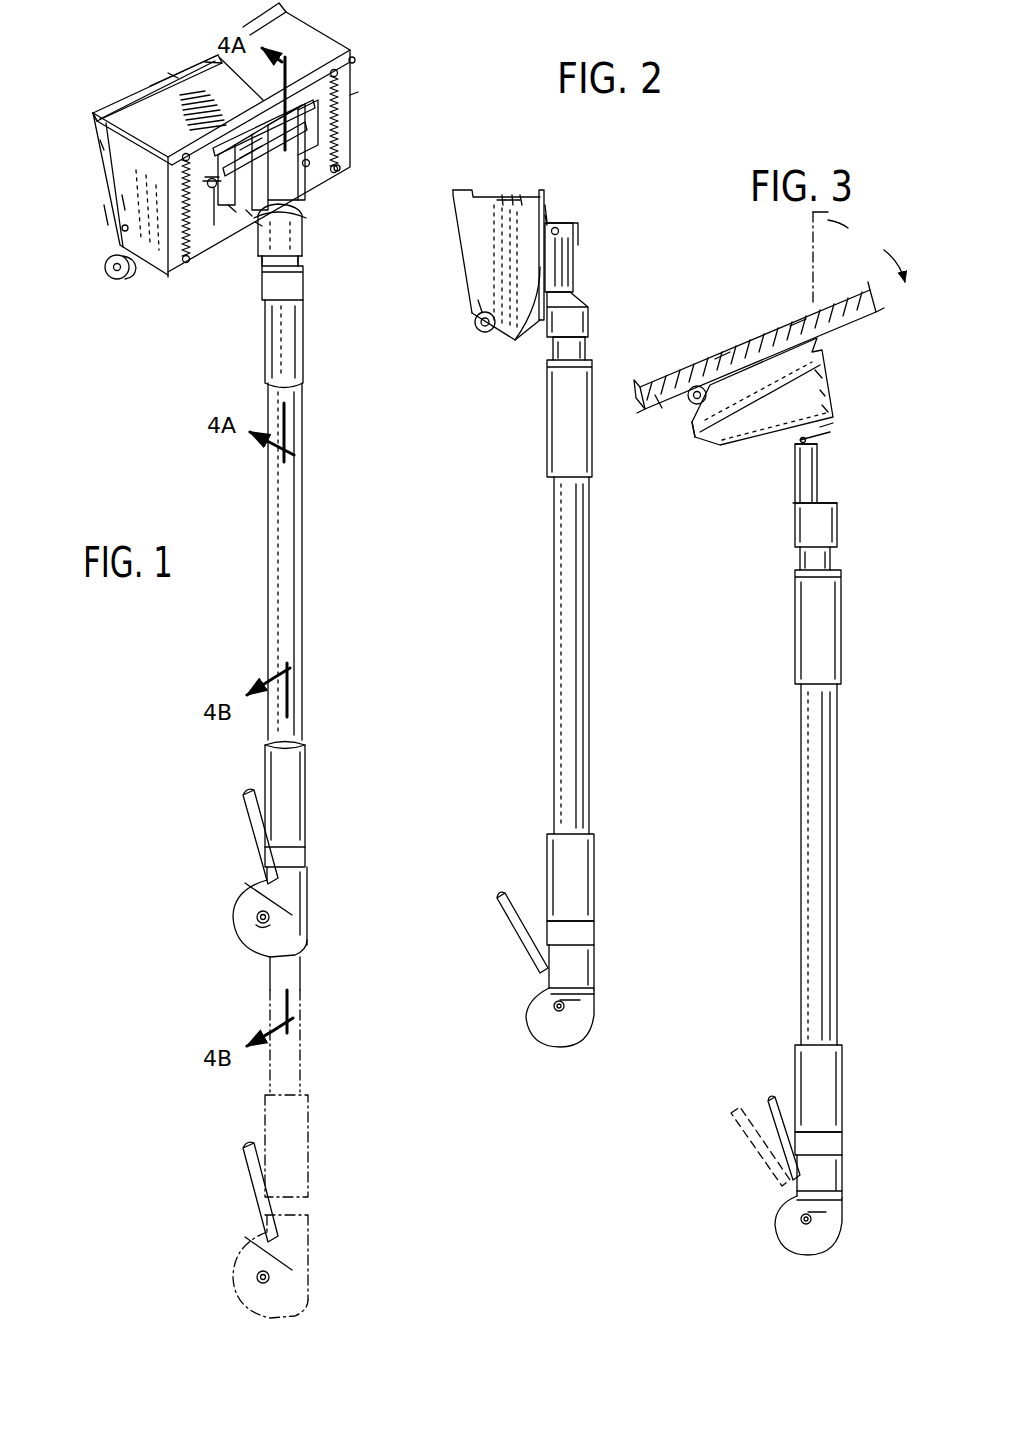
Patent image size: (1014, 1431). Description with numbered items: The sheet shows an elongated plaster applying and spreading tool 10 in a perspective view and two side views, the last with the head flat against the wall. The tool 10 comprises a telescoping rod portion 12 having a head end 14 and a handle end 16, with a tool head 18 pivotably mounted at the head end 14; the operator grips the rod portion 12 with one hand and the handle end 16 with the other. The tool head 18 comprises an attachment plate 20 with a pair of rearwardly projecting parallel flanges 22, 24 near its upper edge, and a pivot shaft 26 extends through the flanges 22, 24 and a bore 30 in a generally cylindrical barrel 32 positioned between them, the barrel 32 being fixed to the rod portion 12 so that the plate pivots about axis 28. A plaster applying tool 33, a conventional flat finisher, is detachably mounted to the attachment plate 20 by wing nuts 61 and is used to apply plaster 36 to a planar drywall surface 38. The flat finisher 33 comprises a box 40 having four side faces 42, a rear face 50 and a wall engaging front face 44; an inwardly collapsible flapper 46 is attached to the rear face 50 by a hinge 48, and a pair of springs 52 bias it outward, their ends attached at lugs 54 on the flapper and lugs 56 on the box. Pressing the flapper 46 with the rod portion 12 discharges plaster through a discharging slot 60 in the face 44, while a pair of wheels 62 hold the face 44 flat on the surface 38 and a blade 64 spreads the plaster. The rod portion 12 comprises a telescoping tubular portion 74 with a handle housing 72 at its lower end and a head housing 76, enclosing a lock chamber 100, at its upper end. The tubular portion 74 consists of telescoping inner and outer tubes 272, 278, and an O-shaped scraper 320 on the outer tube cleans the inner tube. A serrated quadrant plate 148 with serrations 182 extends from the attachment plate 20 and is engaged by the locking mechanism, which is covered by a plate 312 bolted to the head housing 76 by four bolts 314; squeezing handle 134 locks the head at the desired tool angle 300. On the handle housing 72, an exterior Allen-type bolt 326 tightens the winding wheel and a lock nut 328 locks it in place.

In FIG. 1, the plaster applying and spreading tool 10 is at (163, 453).
In FIG. 2, the plaster applying and spreading tool 10 is at (545, 170).
In FIG. 3, the plaster applying and spreading tool 10 is at (838, 352).
In FIG. 1, the telescoping rod portion 12 is at (266, 488).
In FIG. 2, the telescoping rod portion 12 is at (552, 582).
In FIG. 3, the telescoping rod portion 12 is at (798, 726).
In FIG. 1, the head end 14 is at (199, 45).
In FIG. 2, the head end 14 is at (548, 190).
In FIG. 3, the head end 14 is at (830, 438).
In FIG. 1, the handle end 16 is at (312, 890).
In FIG. 2, the handle end 16 is at (537, 1040).
In FIG. 3, the handle end 16 is at (784, 1250).
In FIG. 1, the tool head 18 is at (140, 283).
In FIG. 2, the tool head 18 is at (522, 197).
In FIG. 3, the tool head 18 is at (818, 368).
In FIG. 1, the attachment plate 20 is at (264, 240).
In FIG. 2, the attachment plate 20 is at (550, 350).
In FIG. 3, the attachment plate 20 is at (755, 440).
In FIG. 1, the flange 22 is at (150, 86).
In FIG. 2, the flange 22 is at (553, 223).
In FIG. 3, the flange 22 is at (775, 445).
In FIG. 1, the flange 24 is at (298, 35).
In FIG. 1, the pivot shaft 26 is at (125, 98).
In FIG. 2, the pivot shaft 26 is at (548, 215).
In FIG. 3, the pivot shaft 26 is at (793, 443).
In FIG. 1, the axis 28 is at (355, 96).
In FIG. 1, the bore 30 is at (170, 73).
In FIG. 1, the barrel 32 is at (212, 60).
In FIG. 1, the plaster applying tool 33 is at (100, 217).
In FIG. 2, the plaster applying tool 33 is at (470, 307).
In FIG. 3, the plaster applying tool 33 is at (690, 440).
In FIG. 3, the plaster 36 is at (757, 338).
In FIG. 3, the drywall surface 38 is at (660, 405).
In FIG. 1, the box 40 is at (123, 202).
In FIG. 2, the box 40 is at (512, 197).
In FIG. 3, the box 40 is at (820, 380).
In FIG. 1, the side face 42 is at (122, 172).
In FIG. 2, the side face 42 is at (503, 197).
In FIG. 3, the side face 42 is at (823, 395).
In FIG. 1, the wall engaging front face 44 is at (101, 150).
In FIG. 2, the wall engaging front face 44 is at (461, 262).
In FIG. 3, the wall engaging front face 44 is at (798, 316).
In FIG. 1, the flapper 46 is at (270, 250).
In FIG. 2, the flapper 46 is at (548, 205).
In FIG. 3, the flapper 46 is at (826, 412).
In FIG. 1, the hinge 48 is at (258, 228).
In FIG. 1, the rear face 50 is at (250, 222).
In FIG. 1, the spring 52 is at (120, 248).
In FIG. 1, the lug 54 is at (125, 228).
In FIG. 1, the lug 56 is at (340, 168).
In FIG. 2, the discharging slot 60 is at (465, 285).
In FIG. 3, the discharging slot 60 is at (722, 353).
In FIG. 1, the wing nut 61 is at (236, 218).
In FIG. 1, the wheel 62 is at (108, 272).
In FIG. 2, the wheel 62 is at (475, 323).
In FIG. 3, the wheel 62 is at (690, 403).
In FIG. 1, the blade 64 is at (95, 125).
In FIG. 2, the blade 64 is at (456, 205).
In FIG. 1, the handle housing 72 is at (315, 920).
In FIG. 2, the handle housing 72 is at (599, 990).
In FIG. 3, the handle housing 72 is at (846, 1160).
In FIG. 1, the telescoping tubular portion 74 is at (303, 500).
In FIG. 2, the telescoping tubular portion 74 is at (590, 582).
In FIG. 3, the telescoping tubular portion 74 is at (800, 770).
In FIG. 1, the head housing 76 is at (302, 225).
In FIG. 2, the head housing 76 is at (589, 299).
In FIG. 3, the head housing 76 is at (836, 520).
In FIG. 1, the lock chamber 100 is at (295, 186).
In FIG. 1, the handle 134 is at (240, 803).
In FIG. 2, the handle 134 is at (508, 935).
In FIG. 3, the handle 134 is at (756, 1115).
In FIG. 1, the quadrant plate 148 is at (322, 150).
In FIG. 2, the quadrant plate 148 is at (573, 234).
In FIG. 2, the serrations 182 is at (574, 260).
In FIG. 1, the inner tube 272 is at (300, 260).
In FIG. 2, the inner tube 272 is at (557, 350).
In FIG. 3, the inner tube 272 is at (832, 560).
In FIG. 1, the outer tube 278 is at (303, 420).
In FIG. 3, the tool angle 300 is at (866, 251).
In FIG. 1, the plate 312 is at (300, 176).
In FIG. 1, the bolt 314 is at (286, 200).
In FIG. 1, the O-shaped scraper 320 is at (303, 280).
In FIG. 2, the O-shaped scraper 320 is at (549, 372).
In FIG. 3, the O-shaped scraper 320 is at (841, 590).
In FIG. 1, the Allen-type bolt 326 is at (257, 917).
In FIG. 2, the Allen-type bolt 326 is at (553, 1008).
In FIG. 3, the Allen-type bolt 326 is at (800, 1218).
In FIG. 1, the lock nut 328 is at (262, 925).
In FIG. 2, the lock nut 328 is at (570, 1014).
In FIG. 3, the lock nut 328 is at (800, 1226).